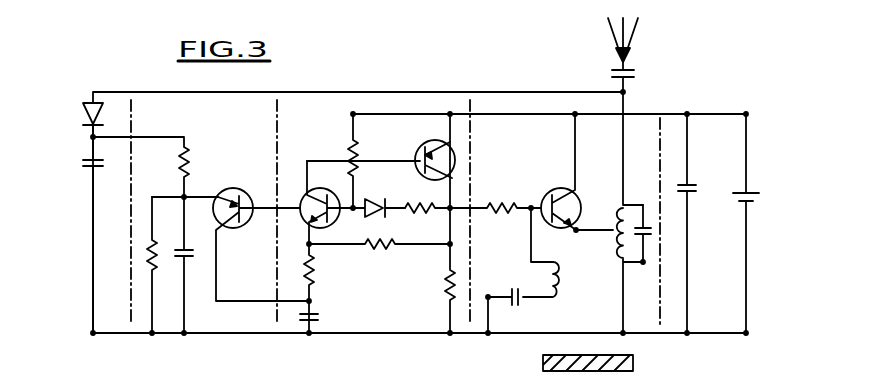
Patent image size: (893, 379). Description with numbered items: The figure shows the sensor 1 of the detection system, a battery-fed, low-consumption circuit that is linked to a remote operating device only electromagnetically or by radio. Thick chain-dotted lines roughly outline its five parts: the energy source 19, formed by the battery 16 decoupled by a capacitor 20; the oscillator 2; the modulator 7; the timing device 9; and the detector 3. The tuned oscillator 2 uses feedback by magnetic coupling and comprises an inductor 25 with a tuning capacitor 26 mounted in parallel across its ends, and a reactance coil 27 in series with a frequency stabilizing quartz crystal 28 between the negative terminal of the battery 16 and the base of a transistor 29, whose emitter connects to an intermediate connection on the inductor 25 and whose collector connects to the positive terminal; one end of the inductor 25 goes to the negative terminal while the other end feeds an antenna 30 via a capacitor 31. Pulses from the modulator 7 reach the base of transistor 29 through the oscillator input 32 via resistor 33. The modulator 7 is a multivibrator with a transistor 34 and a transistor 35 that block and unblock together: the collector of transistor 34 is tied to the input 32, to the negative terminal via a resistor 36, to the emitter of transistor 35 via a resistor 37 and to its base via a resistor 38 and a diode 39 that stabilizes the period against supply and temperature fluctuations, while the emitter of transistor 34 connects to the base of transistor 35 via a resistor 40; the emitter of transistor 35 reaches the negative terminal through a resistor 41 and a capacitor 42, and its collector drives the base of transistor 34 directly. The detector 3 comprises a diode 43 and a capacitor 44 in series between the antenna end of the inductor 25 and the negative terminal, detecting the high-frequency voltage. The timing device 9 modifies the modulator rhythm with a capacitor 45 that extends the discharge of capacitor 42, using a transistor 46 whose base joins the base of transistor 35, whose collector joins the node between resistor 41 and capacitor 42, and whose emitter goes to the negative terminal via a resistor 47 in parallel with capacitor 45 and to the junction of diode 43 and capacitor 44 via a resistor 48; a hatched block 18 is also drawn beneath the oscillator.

The sensor 1 is at (510, 88).
The oscillator 2 is at (550, 305).
The detector 3 is at (88, 232).
The modulator 7 is at (387, 308).
The timing device 9 is at (221, 310).
The battery 16 is at (758, 194).
The core 18 is at (635, 362).
The energy source 19 is at (732, 337).
The capacitor 20 is at (690, 182).
The inductor 25 is at (609, 208).
The tuning capacitor 26 is at (645, 215).
The reactance coil 27 is at (563, 284).
The quartz crystal 28 is at (518, 290).
The transistor 29 is at (556, 192).
The antenna 30 is at (637, 36).
The capacitor 31 is at (637, 74).
The oscillator input 32 is at (480, 203).
The resistor 33 is at (520, 204).
The transistor 34 is at (430, 146).
The transistor 35 is at (304, 196).
The resistor 36 is at (445, 283).
The resistor 37 is at (378, 250).
The resistor 38 is at (415, 212).
The diode 39 is at (370, 200).
The resistor 40 is at (350, 150).
The resistor 41 is at (316, 276).
The capacitor 42 is at (316, 313).
The diode 43 is at (83, 113).
The capacitor 44 is at (83, 163).
The capacitor 45 is at (191, 259).
The transistor 46 is at (240, 186).
The resistor 47 is at (156, 268).
The resistor 48 is at (188, 170).